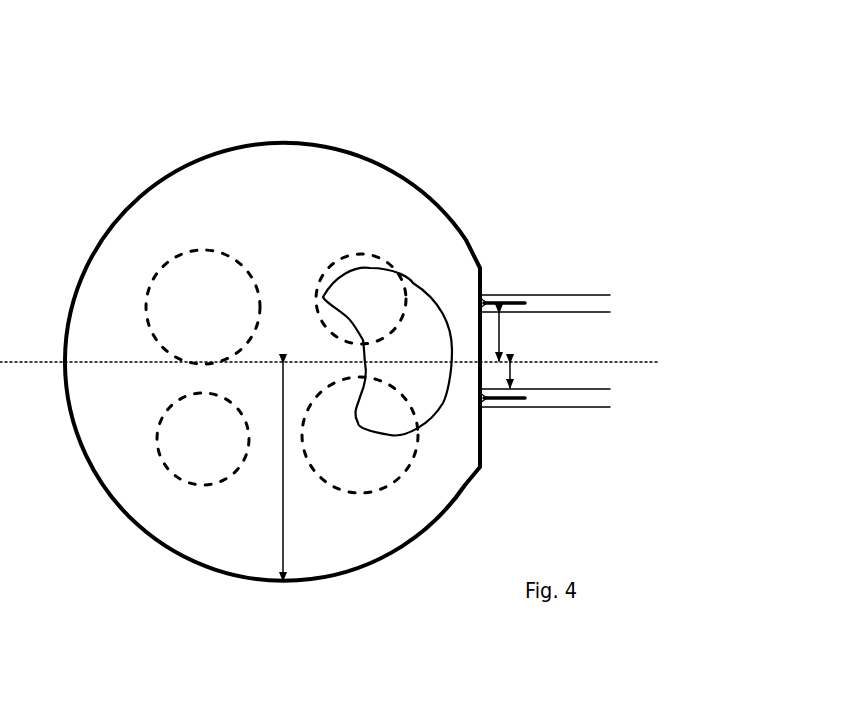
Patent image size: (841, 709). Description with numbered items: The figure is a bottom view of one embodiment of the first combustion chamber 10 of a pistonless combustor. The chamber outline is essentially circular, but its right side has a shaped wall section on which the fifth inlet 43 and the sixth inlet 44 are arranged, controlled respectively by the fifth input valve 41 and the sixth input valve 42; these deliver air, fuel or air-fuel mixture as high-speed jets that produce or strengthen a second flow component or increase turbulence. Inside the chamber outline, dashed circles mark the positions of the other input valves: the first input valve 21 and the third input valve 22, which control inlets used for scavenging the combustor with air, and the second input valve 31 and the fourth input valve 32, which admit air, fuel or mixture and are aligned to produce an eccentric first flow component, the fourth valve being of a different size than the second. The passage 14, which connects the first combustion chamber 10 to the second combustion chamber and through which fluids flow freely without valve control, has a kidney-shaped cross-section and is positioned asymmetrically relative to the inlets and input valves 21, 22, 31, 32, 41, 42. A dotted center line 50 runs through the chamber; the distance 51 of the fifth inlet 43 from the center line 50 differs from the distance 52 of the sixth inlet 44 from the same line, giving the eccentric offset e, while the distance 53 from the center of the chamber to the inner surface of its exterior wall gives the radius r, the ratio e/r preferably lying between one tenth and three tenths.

The first combustion chamber 10 is at (282, 223).
The passage 14 is at (452, 333).
The first input valve 21 is at (212, 250).
The third input valve 22 is at (185, 480).
The second input valve 31 is at (355, 257).
The fourth input valve 32 is at (352, 490).
The fifth input valve 41 is at (518, 300).
The sixth input valve 42 is at (510, 400).
The fifth inlet 43 is at (580, 310).
The sixth inlet 44 is at (578, 397).
The center line 50 is at (635, 362).
The distance 51 is at (499, 336).
The distance 52 is at (510, 377).
The distance 53 is at (282, 547).